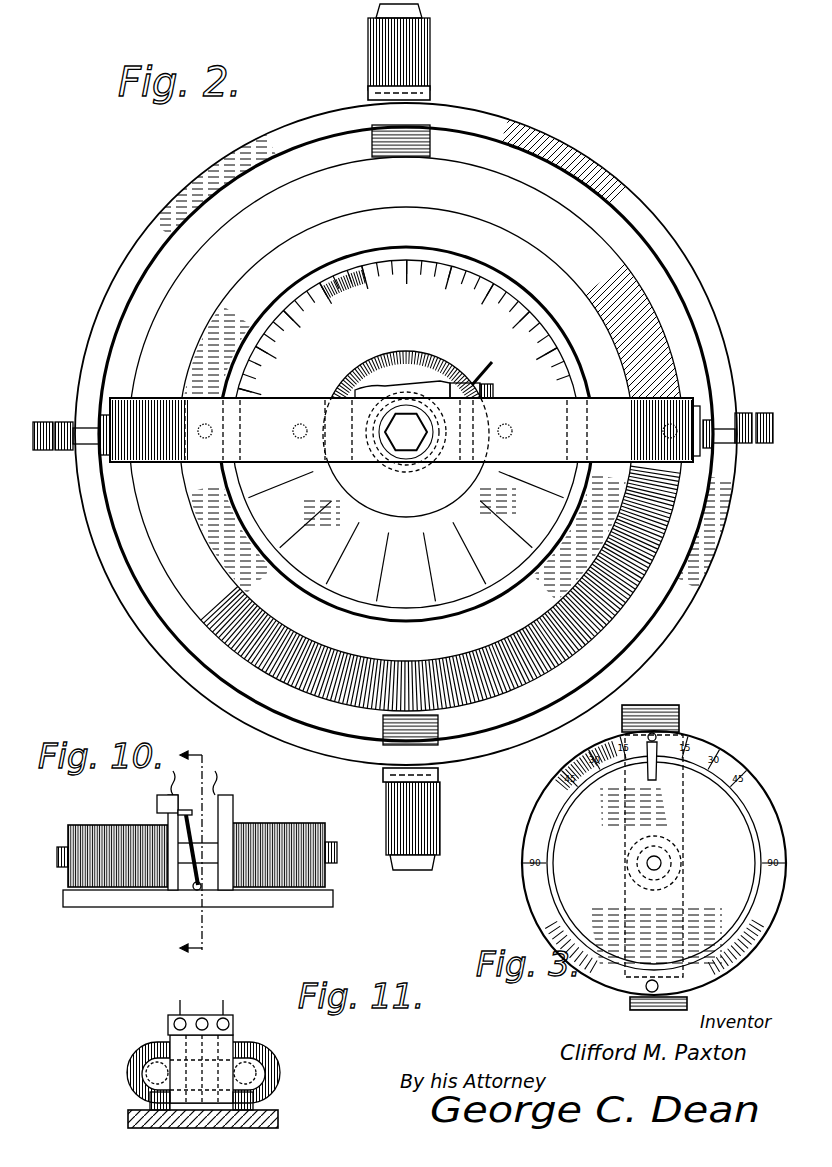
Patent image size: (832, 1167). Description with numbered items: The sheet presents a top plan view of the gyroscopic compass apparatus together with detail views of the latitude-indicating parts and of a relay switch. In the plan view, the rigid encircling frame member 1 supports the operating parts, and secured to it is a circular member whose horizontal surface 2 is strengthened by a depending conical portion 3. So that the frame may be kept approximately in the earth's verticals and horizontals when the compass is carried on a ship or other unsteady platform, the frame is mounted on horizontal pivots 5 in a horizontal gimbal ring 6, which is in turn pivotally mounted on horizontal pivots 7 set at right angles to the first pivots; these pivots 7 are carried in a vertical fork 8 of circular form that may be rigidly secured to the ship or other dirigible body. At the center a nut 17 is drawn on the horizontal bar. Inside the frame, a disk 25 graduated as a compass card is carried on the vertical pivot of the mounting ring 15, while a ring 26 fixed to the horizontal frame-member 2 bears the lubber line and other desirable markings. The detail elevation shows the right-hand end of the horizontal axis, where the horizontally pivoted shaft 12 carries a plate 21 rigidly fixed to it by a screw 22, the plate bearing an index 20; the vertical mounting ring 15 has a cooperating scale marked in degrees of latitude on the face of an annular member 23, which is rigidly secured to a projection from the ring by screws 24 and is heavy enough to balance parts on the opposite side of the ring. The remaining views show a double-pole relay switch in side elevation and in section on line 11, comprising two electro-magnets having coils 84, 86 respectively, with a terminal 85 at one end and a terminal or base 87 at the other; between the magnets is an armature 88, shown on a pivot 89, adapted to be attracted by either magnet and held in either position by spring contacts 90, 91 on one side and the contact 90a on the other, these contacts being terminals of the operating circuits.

In FIG. 2, the encircling frame member 1 is at (128, 398).
In FIG. 2, the horizontal surface 2 is at (406, 434).
In FIG. 2, the depending conical portion 3 is at (406, 434).
In FIG. 2, the horizontal pivots 5 is at (100, 450).
In FIG. 2, the horizontal gimbal ring 6 is at (85, 400).
In FIG. 2, the horizontal pivots 7 is at (430, 92).
In FIG. 2, the vertical fork 8 is at (375, 47).
In FIG. 2, the central hex nut 17 is at (420, 450).
In FIG. 2, the disk graduated as a compass card 25 is at (504, 312).
In FIG. 2, the ring 26 is at (486, 270).
In FIG. 3, the horizontally pivoted shaft 12 is at (662, 863).
In FIG. 3, the vertical mounting ring 15 is at (622, 722).
In FIG. 3, the index 20 is at (660, 770).
In FIG. 3, the plate 21 is at (654, 863).
In FIG. 3, the screw 22 is at (640, 836).
In FIG. 3, the annular member 23 is at (758, 795).
In FIG. 3, the screws 24 is at (658, 740).
In FIG. 10, the section line 11— 11 is at (204, 850).
In FIG. 10, the coil 84 is at (80, 828).
In FIG. 11, the coil 84 is at (130, 1063).
In FIG. 10, the left terminal 85 is at (62, 870).
In FIG. 10, the coil 86 is at (295, 828).
In FIG. 10, the terminal base 87 is at (335, 865).
In FIG. 11, the terminal base 87 is at (262, 1095).
In FIG. 10, the armature 88 is at (190, 873).
In FIG. 11, the armature 88 is at (222, 1050).
In FIG. 10, the pivot 89 is at (195, 890).
In FIG. 10, the spring contact 90 is at (160, 815).
In FIG. 11, the spring contact 90 is at (170, 1030).
In FIG. 10, the spring contact 90a is at (233, 815).
In FIG. 11, the spring contact 91 is at (233, 1023).